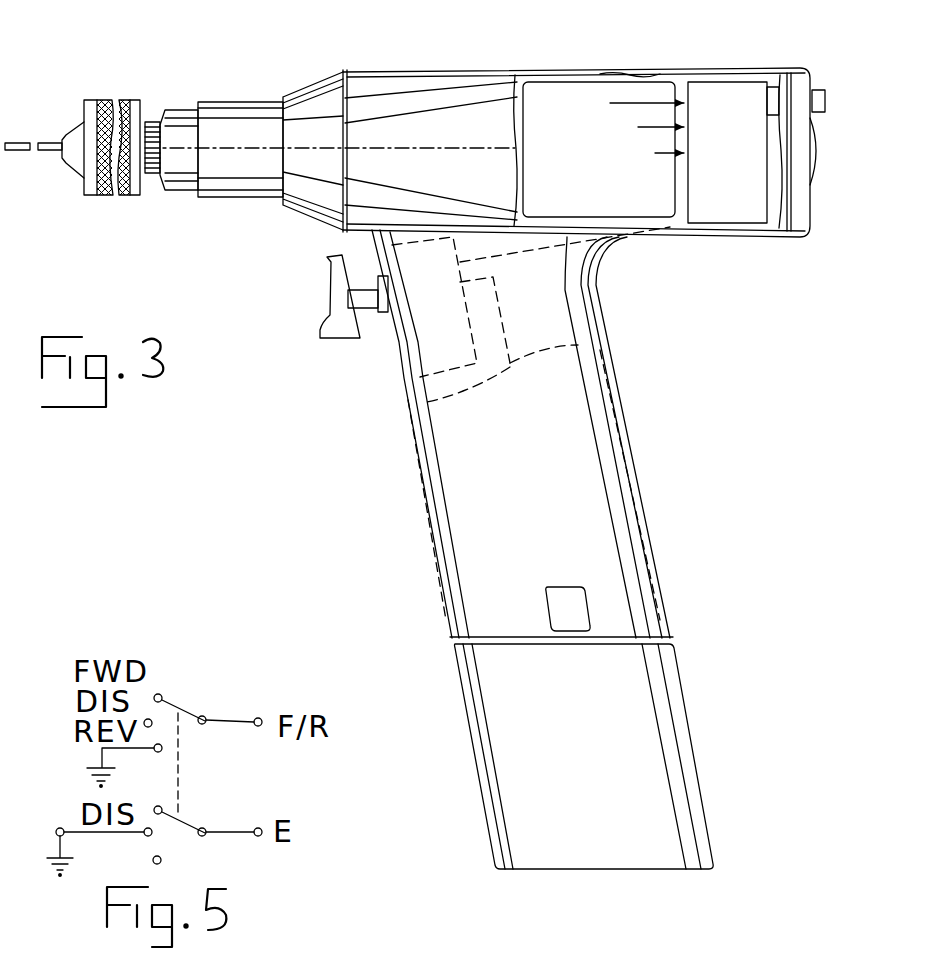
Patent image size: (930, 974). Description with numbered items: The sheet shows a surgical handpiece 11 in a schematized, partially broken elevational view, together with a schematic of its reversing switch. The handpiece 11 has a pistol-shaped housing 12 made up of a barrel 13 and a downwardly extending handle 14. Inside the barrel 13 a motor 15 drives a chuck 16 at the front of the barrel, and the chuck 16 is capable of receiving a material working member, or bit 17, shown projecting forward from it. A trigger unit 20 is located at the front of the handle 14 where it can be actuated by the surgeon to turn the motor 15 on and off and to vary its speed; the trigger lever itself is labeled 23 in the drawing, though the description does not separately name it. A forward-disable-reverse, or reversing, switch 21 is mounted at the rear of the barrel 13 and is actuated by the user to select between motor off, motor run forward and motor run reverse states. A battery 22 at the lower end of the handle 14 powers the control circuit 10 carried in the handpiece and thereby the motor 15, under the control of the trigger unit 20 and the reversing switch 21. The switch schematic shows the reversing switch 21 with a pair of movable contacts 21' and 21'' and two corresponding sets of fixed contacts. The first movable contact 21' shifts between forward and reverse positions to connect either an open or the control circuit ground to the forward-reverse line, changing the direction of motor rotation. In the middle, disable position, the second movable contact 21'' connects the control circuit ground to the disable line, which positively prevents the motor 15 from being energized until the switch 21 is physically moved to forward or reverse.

In FIG. 3, the control circuit 10 is at (706, 74).
In FIG. 3, the handpiece 11 is at (555, 68).
In FIG. 3, the housing 12 is at (490, 68).
In FIG. 3, the barrel 13 is at (399, 72).
In FIG. 3, the handle 14 is at (628, 418).
In FIG. 3, the motor 15 is at (620, 76).
In FIG. 3, the chuck 16 is at (101, 101).
In FIG. 3, the bit 17 is at (16, 151).
In FIG. 3, the trigger unit 20 is at (381, 345).
In FIG. 3, the reversing switch 21 is at (839, 69).
In FIG. 5, the reversing switch 21 is at (248, 725).
In FIG. 5, the first movable contact 21' is at (174, 716).
In FIG. 5, the second movable contact 21'' is at (160, 821).
In FIG. 3, the battery 22 is at (665, 716).
In FIG. 3, the trigger 23 is at (348, 293).